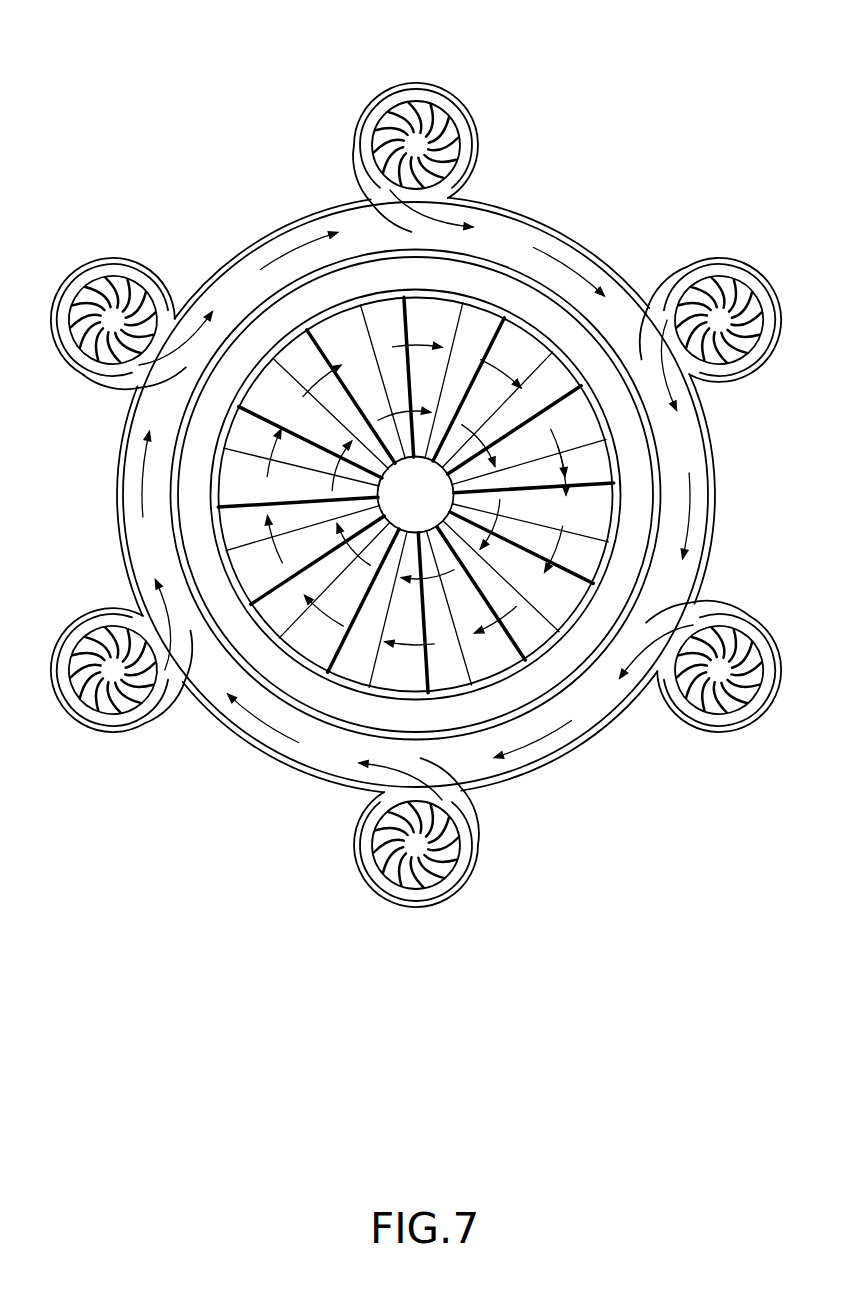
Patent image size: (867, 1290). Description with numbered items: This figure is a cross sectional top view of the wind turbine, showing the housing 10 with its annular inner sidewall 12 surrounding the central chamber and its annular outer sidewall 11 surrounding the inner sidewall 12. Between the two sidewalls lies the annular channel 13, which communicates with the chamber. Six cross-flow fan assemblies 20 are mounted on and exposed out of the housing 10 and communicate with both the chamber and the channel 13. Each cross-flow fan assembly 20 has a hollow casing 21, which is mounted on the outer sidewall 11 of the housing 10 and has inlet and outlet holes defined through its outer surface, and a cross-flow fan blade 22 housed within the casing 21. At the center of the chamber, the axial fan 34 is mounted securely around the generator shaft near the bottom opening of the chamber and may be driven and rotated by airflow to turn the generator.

The housing 10 is at (545, 210).
The outer sidewall 11 is at (228, 267).
The inner sidewall 12 is at (338, 727).
The channel 13 is at (690, 458).
The cross-flow fan assembly 20 is at (392, 72).
The casing 21 is at (353, 138).
The cross-flow fan blade 22 is at (425, 107).
The axial fan 34 is at (522, 660).